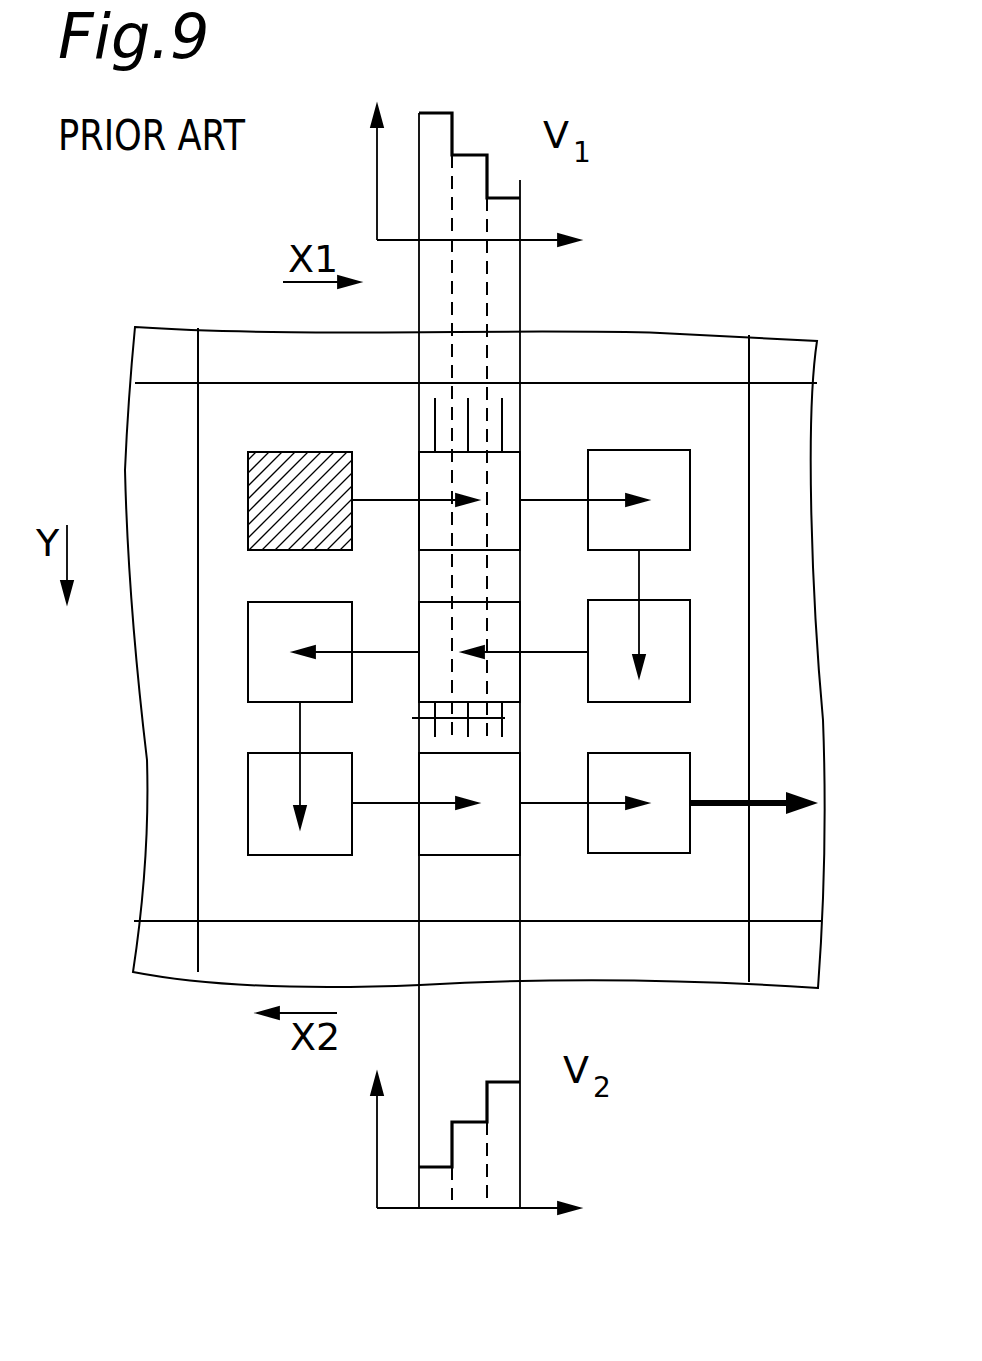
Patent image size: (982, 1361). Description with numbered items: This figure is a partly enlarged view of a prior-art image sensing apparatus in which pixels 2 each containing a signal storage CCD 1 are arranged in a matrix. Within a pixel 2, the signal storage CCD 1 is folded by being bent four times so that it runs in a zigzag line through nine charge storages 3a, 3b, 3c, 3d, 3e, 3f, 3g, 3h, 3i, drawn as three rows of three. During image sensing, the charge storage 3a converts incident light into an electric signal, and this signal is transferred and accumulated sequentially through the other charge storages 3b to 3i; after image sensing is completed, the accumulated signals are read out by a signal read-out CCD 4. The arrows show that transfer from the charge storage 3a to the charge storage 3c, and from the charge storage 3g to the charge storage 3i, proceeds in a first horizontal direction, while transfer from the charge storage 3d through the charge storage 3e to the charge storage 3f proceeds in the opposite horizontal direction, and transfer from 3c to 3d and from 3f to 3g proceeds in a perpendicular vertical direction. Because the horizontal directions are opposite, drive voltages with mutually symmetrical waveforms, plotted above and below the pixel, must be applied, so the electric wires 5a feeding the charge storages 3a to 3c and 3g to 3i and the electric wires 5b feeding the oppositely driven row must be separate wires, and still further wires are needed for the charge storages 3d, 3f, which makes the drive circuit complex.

The signal storage CCD 1 is at (486, 866).
The pixel 2 is at (153, 345).
The charge storage 3a is at (280, 452).
The charge storage 3b is at (520, 473).
The charge storage 3c is at (615, 450).
The charge storage 3d is at (658, 600).
The charge storage 3e is at (460, 602).
The charge storage 3f is at (280, 602).
The charge storage 3g is at (292, 753).
The charge storage 3h is at (520, 778).
The charge storage 3i is at (615, 753).
The signal read-out CCD 4 is at (767, 807).
The electric wires 5a is at (502, 405).
The electric wires 5b is at (470, 722).